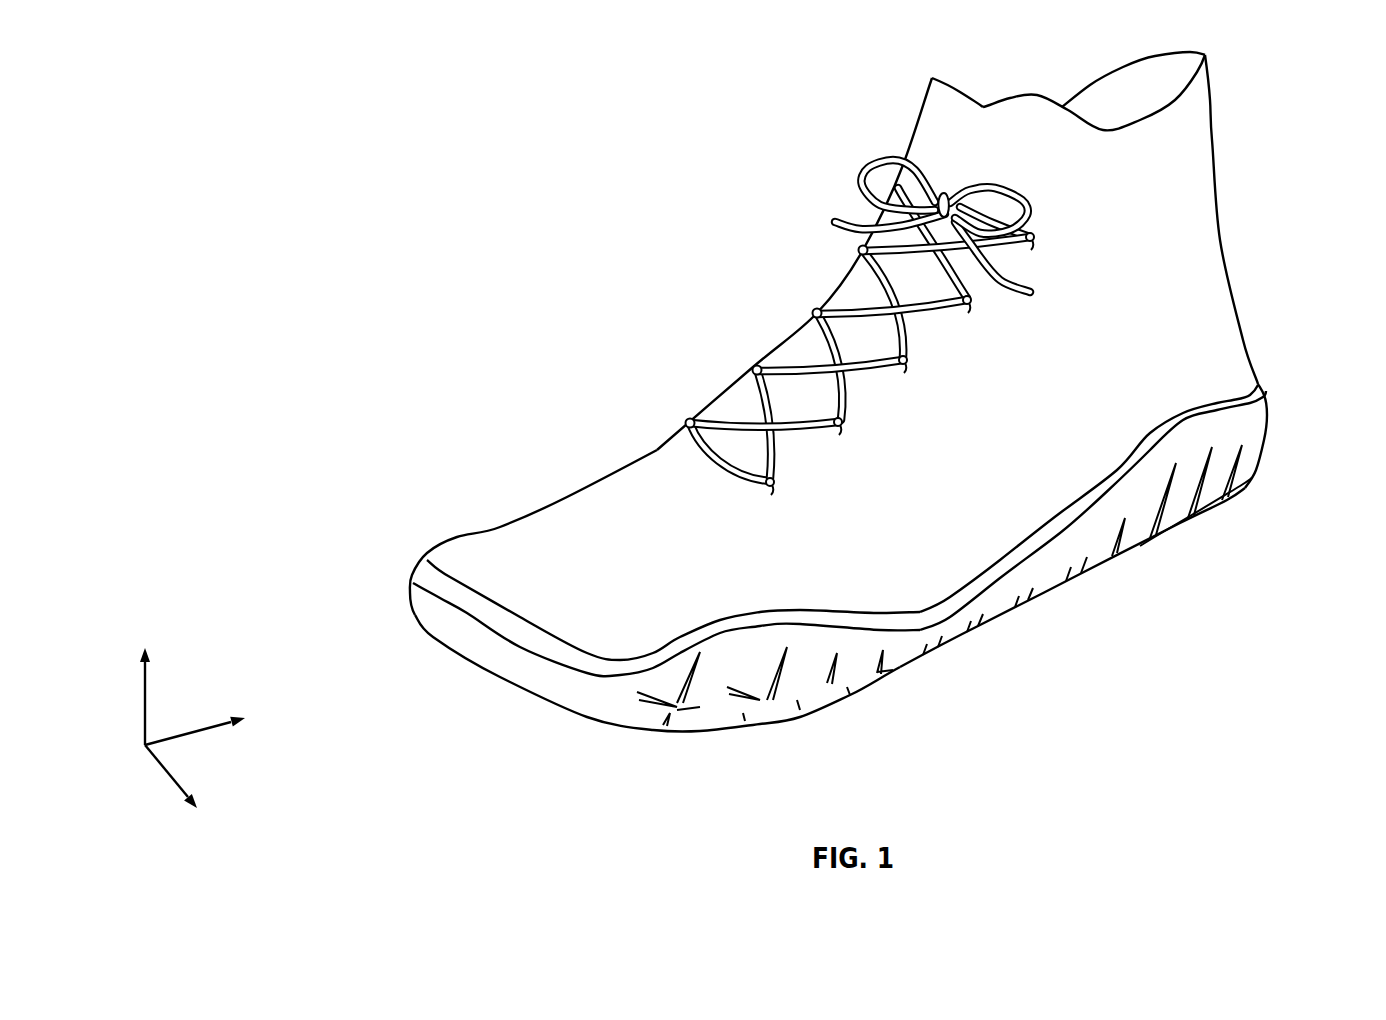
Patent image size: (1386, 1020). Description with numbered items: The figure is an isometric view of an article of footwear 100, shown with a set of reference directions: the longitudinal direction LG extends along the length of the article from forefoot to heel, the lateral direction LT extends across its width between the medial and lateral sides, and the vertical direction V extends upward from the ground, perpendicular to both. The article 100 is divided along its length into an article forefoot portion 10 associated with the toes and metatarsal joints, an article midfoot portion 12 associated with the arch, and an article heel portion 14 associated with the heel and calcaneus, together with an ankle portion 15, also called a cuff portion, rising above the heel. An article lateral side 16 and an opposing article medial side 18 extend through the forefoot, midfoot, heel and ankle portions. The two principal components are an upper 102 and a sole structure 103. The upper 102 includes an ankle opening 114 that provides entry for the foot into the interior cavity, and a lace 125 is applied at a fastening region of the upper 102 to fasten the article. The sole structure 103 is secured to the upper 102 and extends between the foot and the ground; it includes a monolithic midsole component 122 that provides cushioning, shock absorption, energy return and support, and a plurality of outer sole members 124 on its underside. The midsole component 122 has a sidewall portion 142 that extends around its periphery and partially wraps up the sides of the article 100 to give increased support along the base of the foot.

The article forefoot portion 10 is at (379, 647).
The article midfoot portion 12 is at (978, 674).
The article heel portion 14 is at (1318, 444).
The ankle portion 15 is at (1244, 112).
The article lateral side 16 is at (1103, 599).
The article medial side 18 is at (747, 346).
The article of footwear 100 is at (606, 171).
The upper 102 is at (533, 535).
The sole structure 103 is at (588, 745).
The ankle opening 114 is at (1069, 66).
The midsole component 122 is at (520, 681).
The outer sole members 124 is at (725, 752).
The lace 125 is at (835, 303).
The sidewall portion 142 is at (1090, 530).
The vertical direction V is at (143, 697).
The longitudinal direction LG is at (197, 735).
The lateral direction LT is at (165, 775).